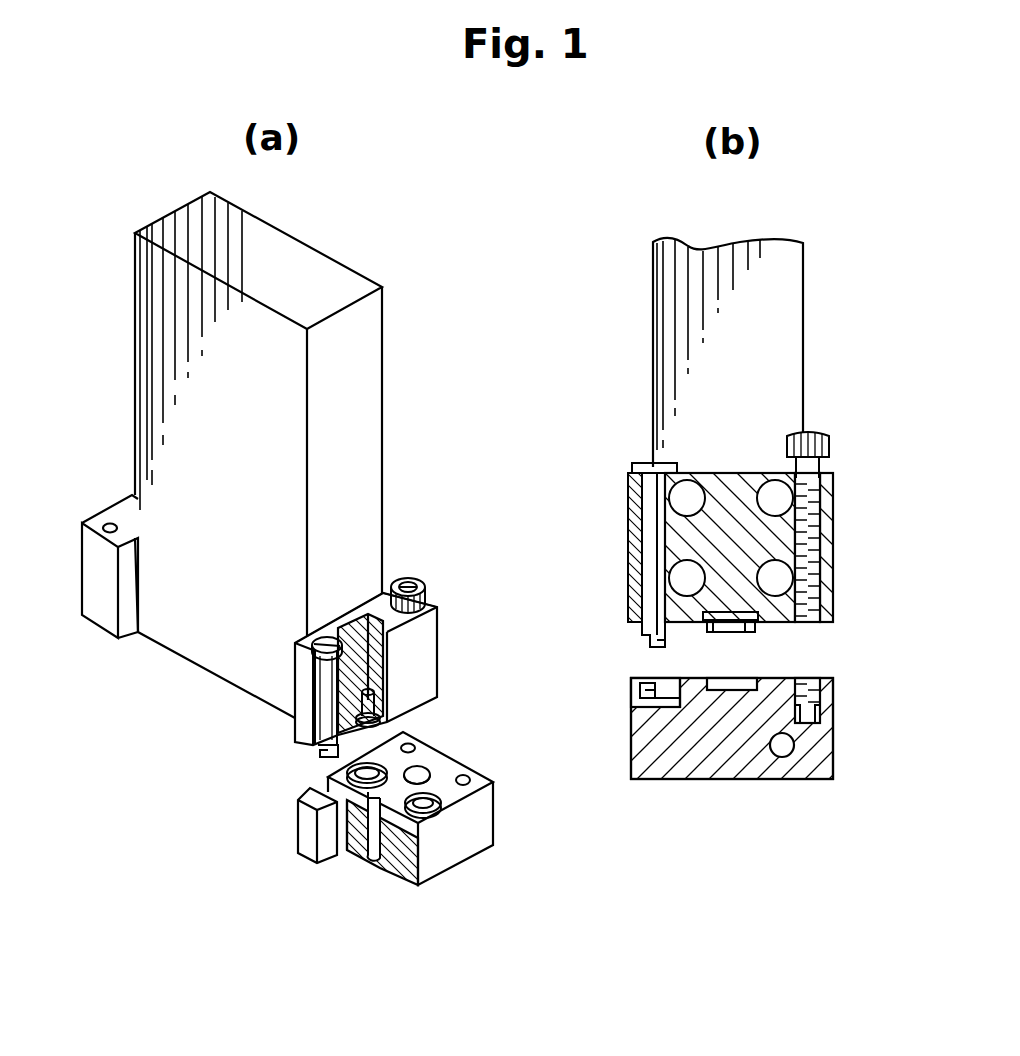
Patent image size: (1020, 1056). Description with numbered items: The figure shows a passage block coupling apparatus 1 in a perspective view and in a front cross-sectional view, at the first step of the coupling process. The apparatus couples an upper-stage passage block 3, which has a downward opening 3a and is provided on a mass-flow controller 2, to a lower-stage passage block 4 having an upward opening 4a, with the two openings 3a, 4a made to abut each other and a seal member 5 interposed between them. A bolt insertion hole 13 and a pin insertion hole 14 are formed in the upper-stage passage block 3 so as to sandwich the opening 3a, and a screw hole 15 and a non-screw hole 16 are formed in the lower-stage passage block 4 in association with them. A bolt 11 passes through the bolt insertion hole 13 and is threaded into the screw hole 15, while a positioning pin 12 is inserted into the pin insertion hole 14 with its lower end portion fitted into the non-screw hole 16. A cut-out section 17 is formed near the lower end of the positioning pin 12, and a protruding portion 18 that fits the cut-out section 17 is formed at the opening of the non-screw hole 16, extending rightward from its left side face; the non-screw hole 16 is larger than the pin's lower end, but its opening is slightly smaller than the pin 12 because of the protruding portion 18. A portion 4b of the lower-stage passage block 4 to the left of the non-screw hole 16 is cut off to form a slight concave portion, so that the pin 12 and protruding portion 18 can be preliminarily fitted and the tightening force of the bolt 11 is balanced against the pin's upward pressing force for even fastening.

The passage block coupling apparatus 1 is at (468, 705).
The mass-flow controller 2 is at (383, 392).
The upper-stage passage block 3 is at (423, 647).
The downward opening 3a is at (377, 720).
The lower-stage passage block 4 is at (482, 832).
The upward opening 4a is at (395, 763).
The portion on the left side of the non-screw hole 4b is at (300, 818).
The seal member 5 is at (341, 644).
The bolt 11 is at (427, 582).
The positioning pin 12 is at (330, 715).
The bolt insertion hole 13 is at (813, 478).
The pin insertion hole 14 is at (327, 670).
The screw hole 15 is at (413, 747).
The non-screw hole 16 is at (338, 797).
The cut-out section 17 is at (320, 758).
The protruding portion 18 is at (640, 703).